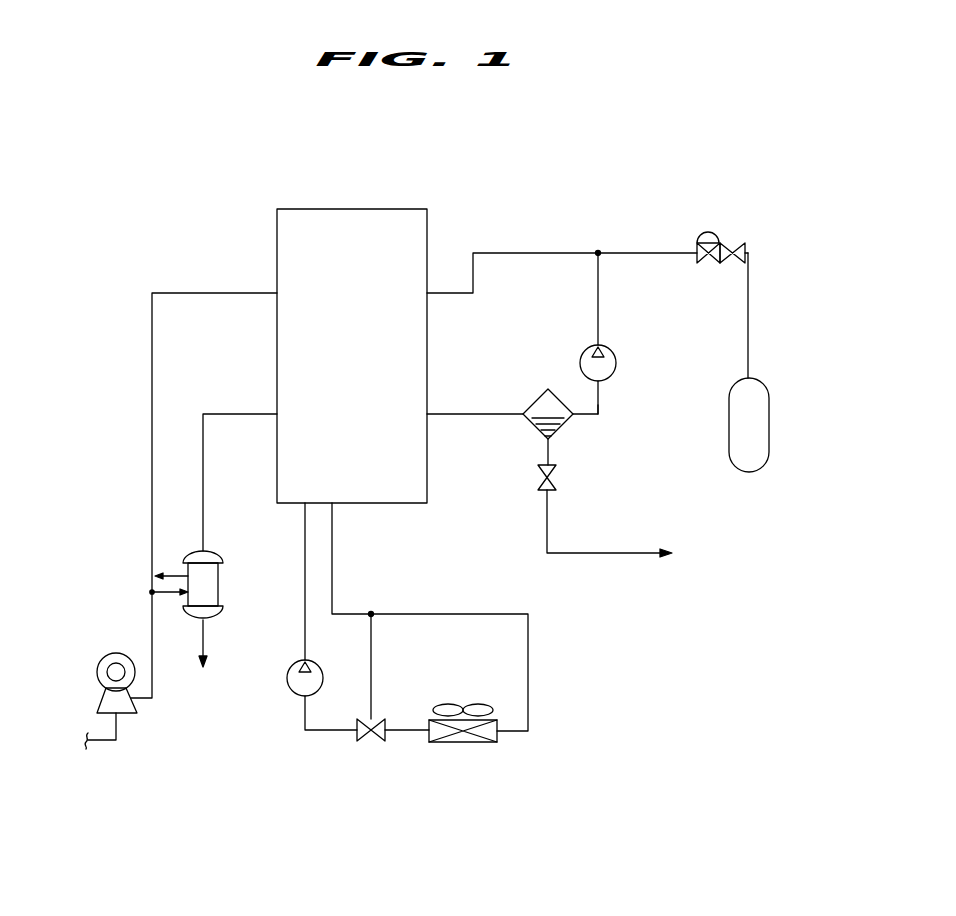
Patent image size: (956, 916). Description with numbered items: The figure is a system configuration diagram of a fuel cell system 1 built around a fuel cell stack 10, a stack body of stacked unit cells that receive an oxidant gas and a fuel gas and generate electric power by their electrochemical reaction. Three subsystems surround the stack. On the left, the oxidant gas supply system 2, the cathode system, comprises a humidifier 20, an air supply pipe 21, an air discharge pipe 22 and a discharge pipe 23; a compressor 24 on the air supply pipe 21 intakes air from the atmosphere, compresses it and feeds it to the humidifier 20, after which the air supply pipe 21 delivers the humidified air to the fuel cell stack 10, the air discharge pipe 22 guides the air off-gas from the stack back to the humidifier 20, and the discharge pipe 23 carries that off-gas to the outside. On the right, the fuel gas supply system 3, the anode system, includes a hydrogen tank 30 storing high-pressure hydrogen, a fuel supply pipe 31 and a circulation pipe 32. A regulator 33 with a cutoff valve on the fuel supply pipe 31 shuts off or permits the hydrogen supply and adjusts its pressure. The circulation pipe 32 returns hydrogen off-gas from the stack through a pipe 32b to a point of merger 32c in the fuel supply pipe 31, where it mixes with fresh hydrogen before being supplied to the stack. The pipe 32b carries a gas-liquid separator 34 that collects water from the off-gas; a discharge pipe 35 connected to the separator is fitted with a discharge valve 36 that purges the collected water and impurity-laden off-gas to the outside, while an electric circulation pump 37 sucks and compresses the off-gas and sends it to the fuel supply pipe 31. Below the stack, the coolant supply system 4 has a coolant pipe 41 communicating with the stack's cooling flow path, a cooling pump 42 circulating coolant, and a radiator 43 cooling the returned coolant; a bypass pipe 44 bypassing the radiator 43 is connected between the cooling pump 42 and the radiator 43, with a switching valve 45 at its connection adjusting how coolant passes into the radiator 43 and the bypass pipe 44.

The fuel cell system 1 is at (249, 156).
The oxidant gas supply system 2 is at (158, 250).
The fuel gas supply system 3 is at (587, 218).
The coolant supply system 4 is at (452, 600).
The fuel cell stack 10 is at (341, 209).
The humidifier 20 is at (219, 587).
The air supply pipe 21 is at (151, 440).
The air discharge pipe 22 is at (202, 478).
The discharge pipe 23 is at (206, 641).
The compressor 24 is at (97, 697).
The hydrogen tank 30 is at (770, 414).
The fuel supply pipe 31 is at (506, 253).
The circulation pipe 32 is at (604, 314).
The pipe 32b is at (600, 410).
The point of merger 32c is at (603, 258).
The regulator 33 is at (713, 222).
The gas-liquid separator 34 is at (565, 430).
The discharge pipe 35 is at (550, 527).
The discharge valve 36 is at (558, 478).
The electric circulation pump 37 is at (616, 360).
The coolant pipe 41 is at (301, 618).
The cooling pump 42 is at (290, 690).
The radiator 43 is at (463, 745).
The bypass pipe 44 is at (375, 676).
The switching valve 45 is at (374, 745).